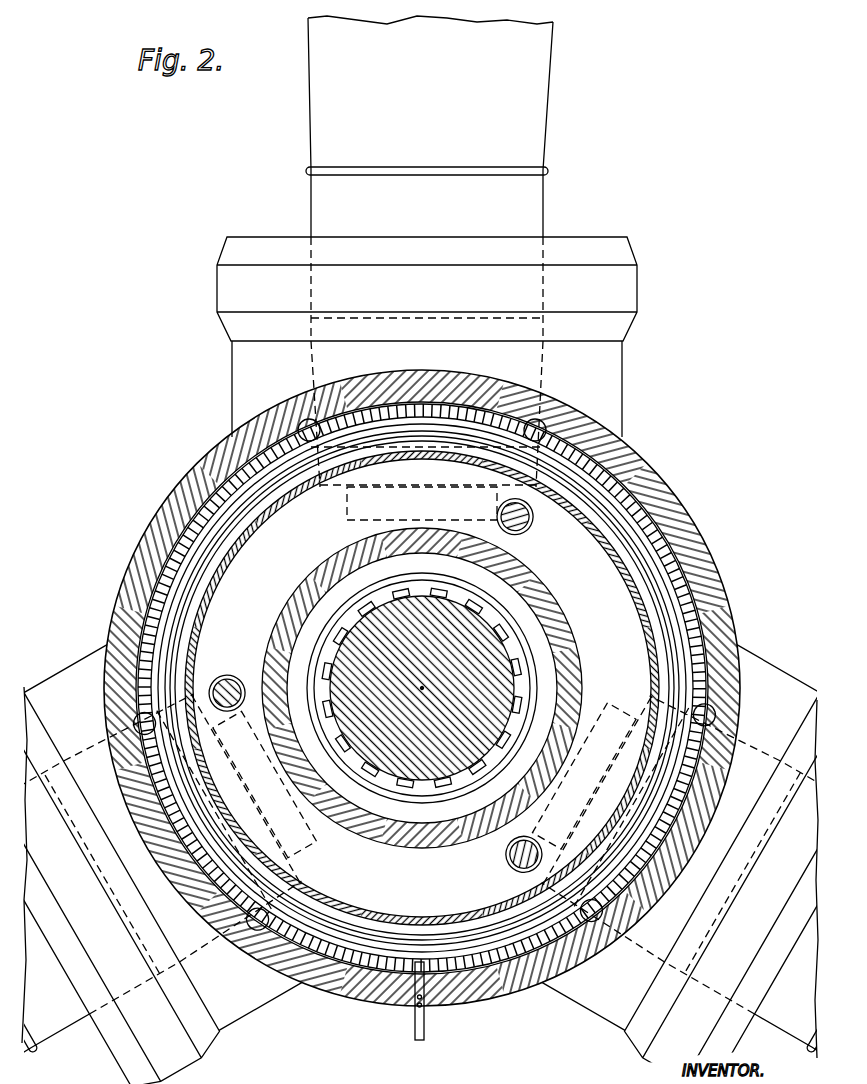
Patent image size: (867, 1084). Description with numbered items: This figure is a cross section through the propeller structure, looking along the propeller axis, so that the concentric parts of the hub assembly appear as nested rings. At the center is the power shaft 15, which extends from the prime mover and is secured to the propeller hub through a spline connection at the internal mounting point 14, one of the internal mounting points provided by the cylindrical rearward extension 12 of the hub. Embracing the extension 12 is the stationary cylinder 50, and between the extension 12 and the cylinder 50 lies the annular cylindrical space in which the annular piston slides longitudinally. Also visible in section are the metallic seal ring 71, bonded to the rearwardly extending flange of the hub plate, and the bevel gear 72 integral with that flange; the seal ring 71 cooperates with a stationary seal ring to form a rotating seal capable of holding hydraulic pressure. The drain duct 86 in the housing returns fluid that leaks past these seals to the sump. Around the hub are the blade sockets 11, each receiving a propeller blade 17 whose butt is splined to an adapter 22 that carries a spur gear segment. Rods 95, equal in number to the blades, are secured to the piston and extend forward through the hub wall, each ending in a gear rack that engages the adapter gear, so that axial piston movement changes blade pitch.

The blade socket 11 is at (620, 296).
The cylindrical rearward extension 12 is at (290, 614).
The internal mounting point 14 is at (510, 613).
The power shaft 15 is at (512, 650).
The propeller blade 17 is at (532, 187).
The adapter 22 is at (467, 505).
The cylinder 50 is at (210, 584).
The metallic seal ring 71 is at (278, 463).
The bevel gear 72 is at (255, 494).
The drain duct 86 is at (405, 990).
The rod 95 is at (531, 527).